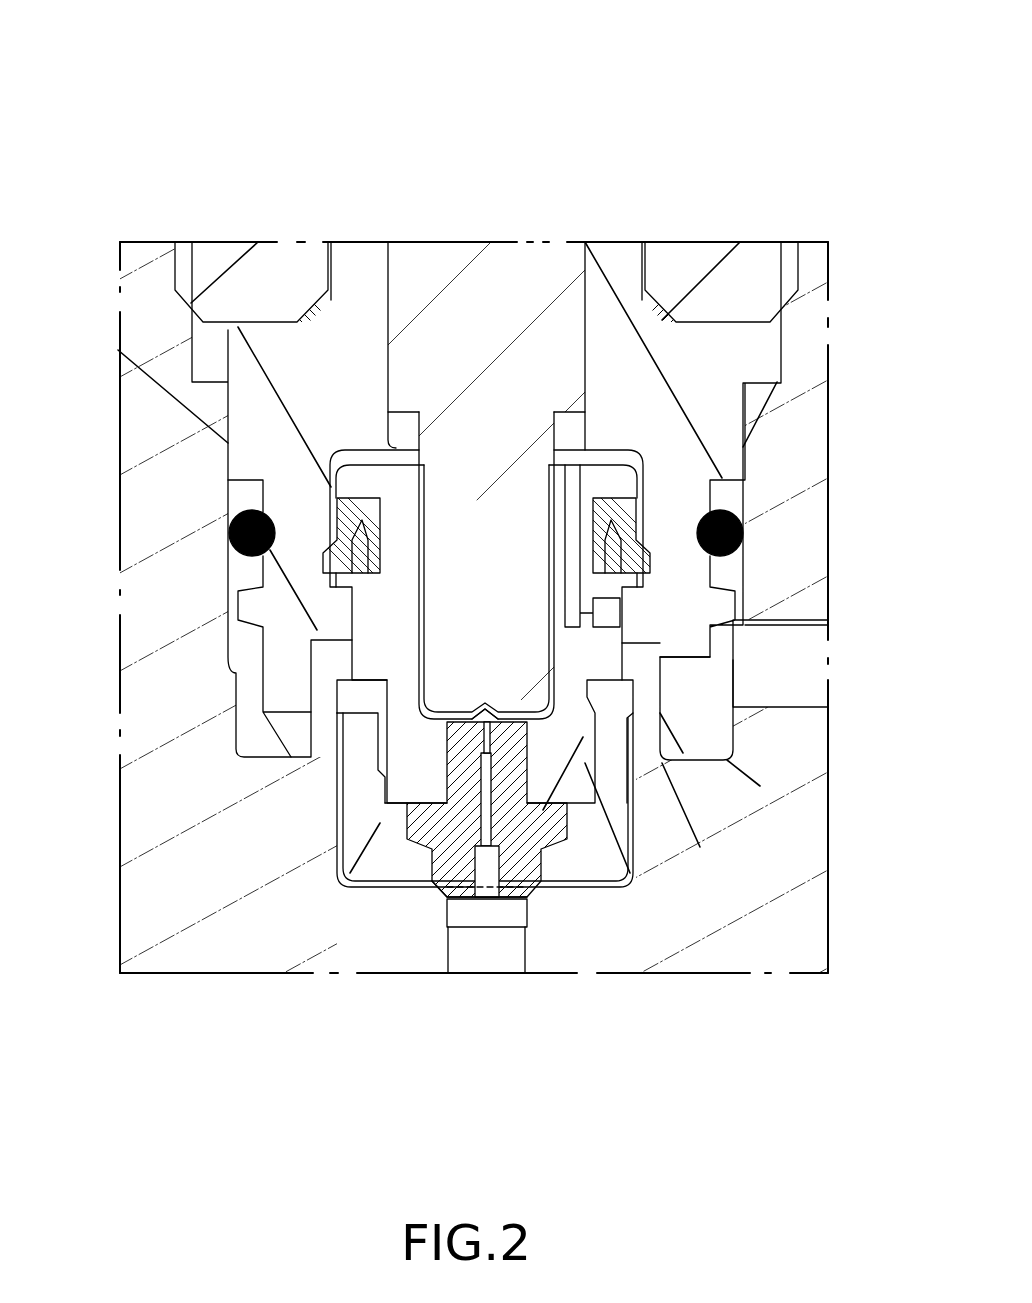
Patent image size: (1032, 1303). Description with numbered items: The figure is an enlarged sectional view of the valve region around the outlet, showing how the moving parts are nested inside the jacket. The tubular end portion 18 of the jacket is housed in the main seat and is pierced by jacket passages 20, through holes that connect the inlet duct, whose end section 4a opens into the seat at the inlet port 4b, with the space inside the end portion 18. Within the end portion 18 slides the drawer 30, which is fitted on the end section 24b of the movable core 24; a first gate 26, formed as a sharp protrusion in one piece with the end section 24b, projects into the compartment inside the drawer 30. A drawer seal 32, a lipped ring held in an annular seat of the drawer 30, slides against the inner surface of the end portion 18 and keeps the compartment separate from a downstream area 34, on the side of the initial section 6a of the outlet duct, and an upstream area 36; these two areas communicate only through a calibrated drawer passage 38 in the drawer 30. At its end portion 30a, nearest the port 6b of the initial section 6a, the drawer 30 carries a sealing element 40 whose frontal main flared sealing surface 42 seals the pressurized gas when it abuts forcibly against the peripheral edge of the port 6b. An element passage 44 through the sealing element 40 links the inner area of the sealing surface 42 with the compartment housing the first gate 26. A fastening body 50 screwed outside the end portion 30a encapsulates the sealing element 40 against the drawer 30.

The tubular end portion 18 is at (258, 410).
The movable core 24 is at (465, 305).
The end section 24b is at (477, 578).
The first gate 26 is at (482, 708).
The drawer 30 is at (400, 693).
The end portion 30a is at (568, 758).
The drawer seal 32 is at (358, 516).
The downstream area 34 is at (645, 737).
The upstream area 36 is at (405, 430).
The calibrated drawer passage 38 is at (573, 493).
The sealing element 40 is at (384, 841).
The main flared sealing surface 42 is at (441, 897).
The element passage 44 is at (488, 821).
The fastening body 50 is at (360, 805).
The end section 4a is at (795, 657).
The inlet port 4b is at (745, 682).
The initial section 6a is at (485, 955).
The port 6b is at (480, 898).
The jacket passages 20 is at (695, 695).